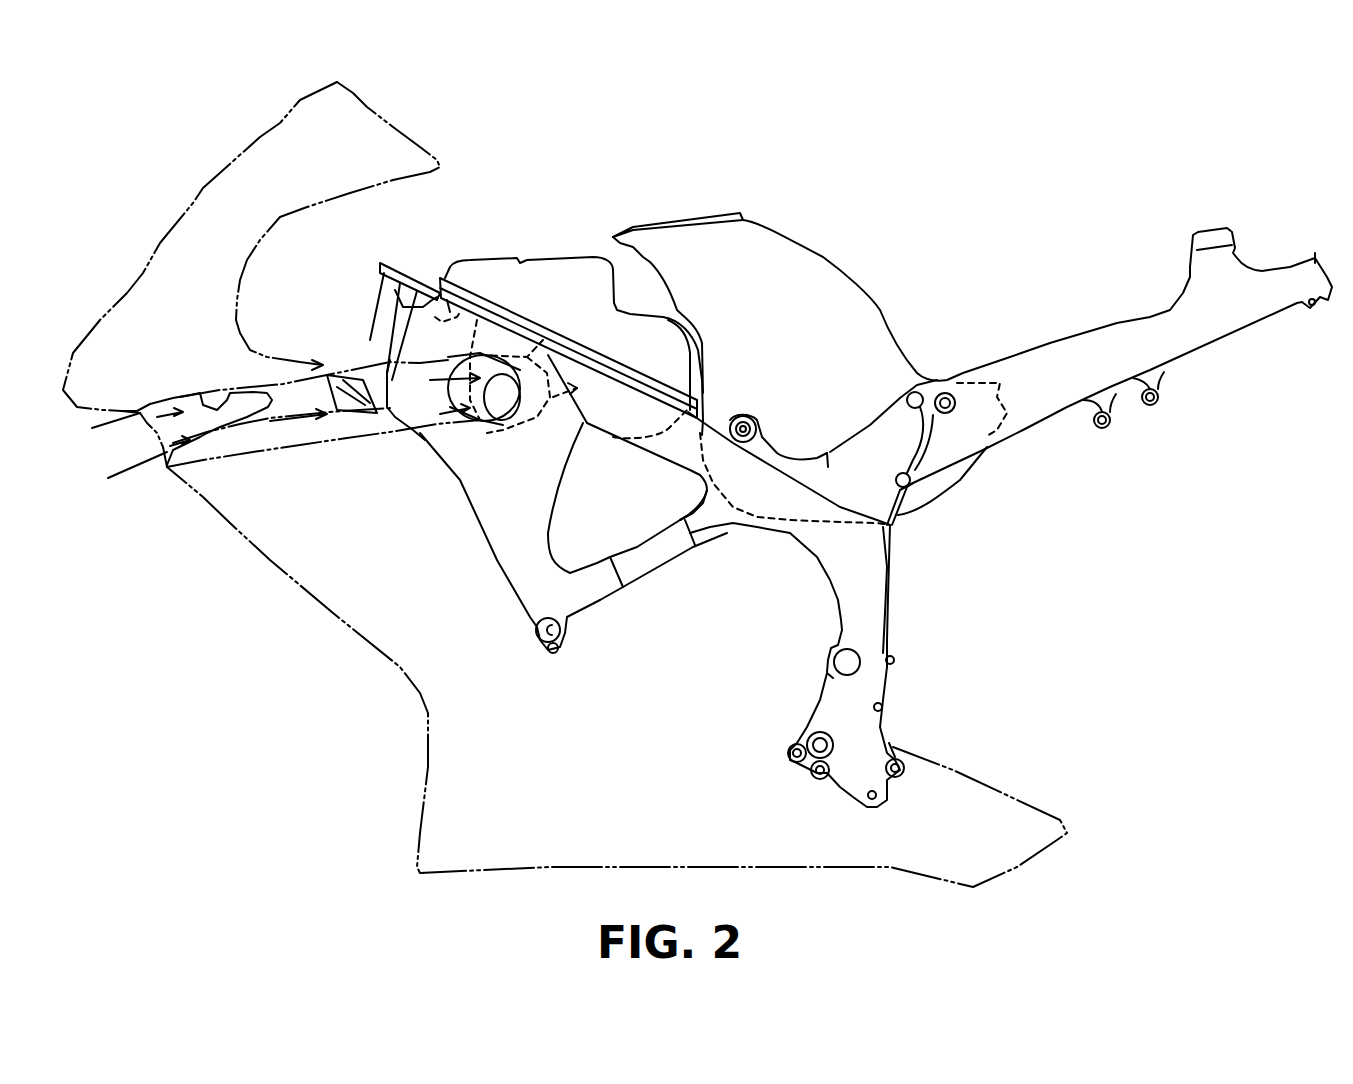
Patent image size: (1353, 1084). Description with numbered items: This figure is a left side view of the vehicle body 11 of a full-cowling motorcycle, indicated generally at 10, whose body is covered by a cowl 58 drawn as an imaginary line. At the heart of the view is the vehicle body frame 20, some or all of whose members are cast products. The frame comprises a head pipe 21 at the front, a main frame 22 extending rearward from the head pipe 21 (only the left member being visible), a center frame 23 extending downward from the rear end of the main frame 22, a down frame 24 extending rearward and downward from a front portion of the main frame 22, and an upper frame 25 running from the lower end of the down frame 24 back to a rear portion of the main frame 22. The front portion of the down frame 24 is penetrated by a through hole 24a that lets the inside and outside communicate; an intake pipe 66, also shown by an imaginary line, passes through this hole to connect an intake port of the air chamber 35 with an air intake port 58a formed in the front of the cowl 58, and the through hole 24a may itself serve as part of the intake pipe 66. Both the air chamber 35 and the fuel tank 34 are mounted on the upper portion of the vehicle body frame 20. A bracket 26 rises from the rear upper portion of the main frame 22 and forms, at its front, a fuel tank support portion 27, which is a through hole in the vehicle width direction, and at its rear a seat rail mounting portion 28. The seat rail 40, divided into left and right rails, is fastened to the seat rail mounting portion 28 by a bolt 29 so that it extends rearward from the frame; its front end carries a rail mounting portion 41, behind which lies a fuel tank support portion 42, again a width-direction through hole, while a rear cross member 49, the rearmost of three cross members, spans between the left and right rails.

The motorcycle 10 is at (178, 167).
The vehicle body 11 is at (442, 243).
The vehicle body frame 20 is at (523, 320).
The head pipe 21 is at (373, 310).
The main frame 22 is at (613, 397).
The center frame 23 is at (880, 617).
The down frame 24 is at (513, 533).
The through hole 24a is at (487, 425).
The upper frame 25 is at (657, 557).
The bracket 26 is at (827, 453).
The fuel tank support portion 27 is at (743, 414).
The seat rail mounting portion 28 is at (887, 430).
The bolt 29 is at (914, 391).
The fuel tank 34 is at (807, 267).
The air chamber 35 is at (577, 267).
The seat rail 40 is at (1193, 363).
The rail mounting portion 41 is at (937, 457).
The fuel tank support portion 42 is at (957, 377).
The rear cross member 49 is at (1208, 237).
The cowl 58 is at (248, 550).
The air intake port 58a is at (190, 390).
The intake pipe 66 is at (320, 443).